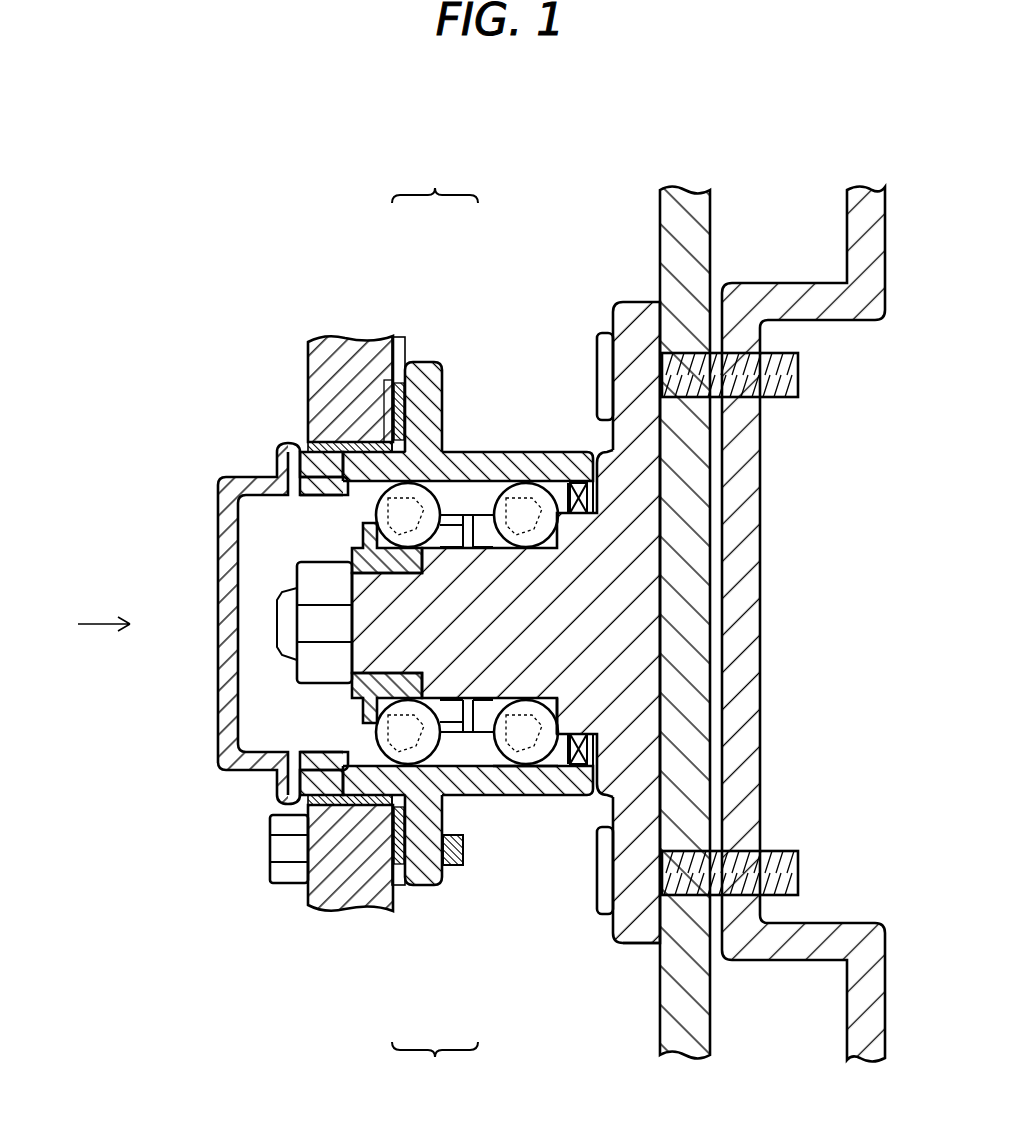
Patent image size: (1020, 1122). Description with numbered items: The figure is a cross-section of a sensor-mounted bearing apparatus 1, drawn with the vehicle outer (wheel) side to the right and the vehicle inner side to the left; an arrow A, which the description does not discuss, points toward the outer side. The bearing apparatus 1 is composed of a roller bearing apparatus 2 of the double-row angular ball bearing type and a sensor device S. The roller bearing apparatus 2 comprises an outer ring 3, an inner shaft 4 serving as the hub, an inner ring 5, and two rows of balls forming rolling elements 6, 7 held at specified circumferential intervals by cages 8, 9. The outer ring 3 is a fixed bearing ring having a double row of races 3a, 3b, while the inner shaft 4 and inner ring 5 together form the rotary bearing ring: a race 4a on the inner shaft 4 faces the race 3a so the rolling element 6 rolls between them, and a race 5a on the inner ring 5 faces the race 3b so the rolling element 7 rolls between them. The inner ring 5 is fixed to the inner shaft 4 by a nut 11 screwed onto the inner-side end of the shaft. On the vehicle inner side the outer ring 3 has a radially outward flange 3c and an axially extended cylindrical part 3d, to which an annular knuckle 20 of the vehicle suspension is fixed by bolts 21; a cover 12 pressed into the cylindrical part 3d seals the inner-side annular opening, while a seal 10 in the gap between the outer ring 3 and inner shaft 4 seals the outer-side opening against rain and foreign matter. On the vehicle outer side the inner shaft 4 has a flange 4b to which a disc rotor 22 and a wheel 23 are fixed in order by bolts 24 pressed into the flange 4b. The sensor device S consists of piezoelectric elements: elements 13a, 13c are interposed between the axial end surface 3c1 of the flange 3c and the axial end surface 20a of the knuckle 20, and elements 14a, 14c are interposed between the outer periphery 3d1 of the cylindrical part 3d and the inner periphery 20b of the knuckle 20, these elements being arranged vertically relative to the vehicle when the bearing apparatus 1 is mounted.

The bearing apparatus 1 is at (486, 341).
The roller bearing apparatus 2 is at (482, 443).
The outer ring 3 is at (493, 452).
The race 3a is at (547, 795).
The race 3b is at (472, 797).
The flange 3c is at (430, 870).
The axial end surface 3c1 is at (400, 383).
The cylindrical part 3d is at (290, 788).
The outer periphery 3d1 is at (300, 440).
The inner shaft 4 is at (488, 577).
The race 4a is at (550, 720).
The flange 4b is at (640, 933).
The inner ring 5 is at (362, 540).
The race 5a is at (362, 720).
The rolling element 6 is at (570, 462).
The rolling element 7 is at (413, 483).
The cage 8 is at (533, 795).
The cage 9 is at (497, 797).
The seal 10 is at (590, 768).
The nut 11 is at (297, 568).
The cover 12 is at (222, 752).
The piezoelectric element 13a is at (393, 430).
The piezoelectric element 13c is at (397, 868).
The piezoelectric element 14a is at (415, 452).
The piezoelectric element 14c is at (410, 875).
The knuckle 20 is at (343, 897).
The axial end surface 20a is at (343, 440).
The inner periphery 20b is at (382, 428).
The bolts 21 is at (282, 880).
The disc rotor 22 is at (693, 1033).
The wheel 23 is at (843, 933).
The bolts 24 is at (800, 375).
The sensor device S is at (435, 626).
The axial direction arrow A is at (90, 626).